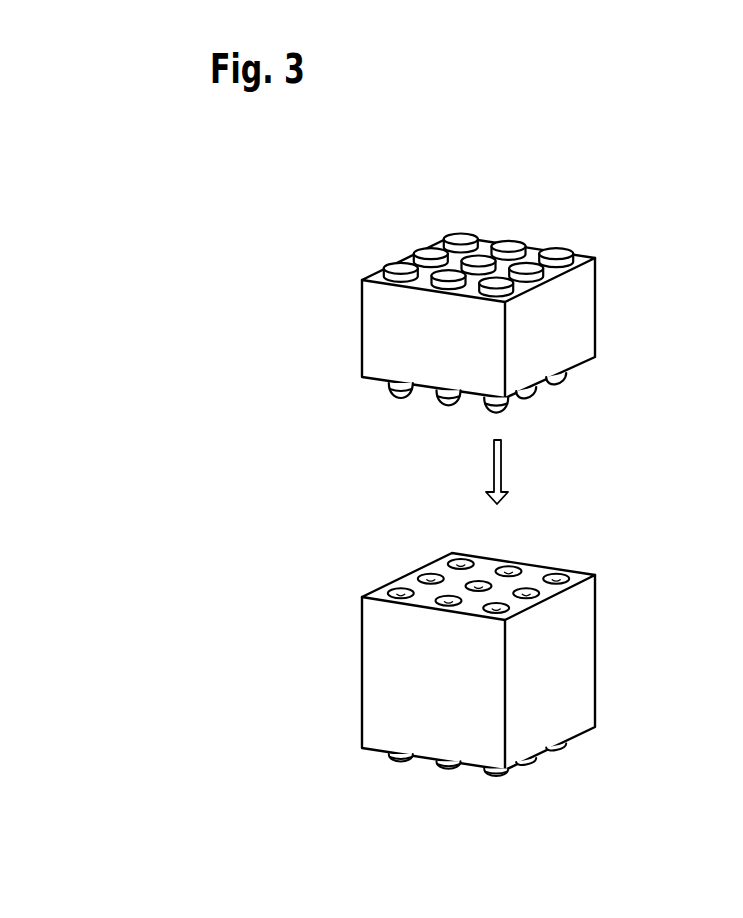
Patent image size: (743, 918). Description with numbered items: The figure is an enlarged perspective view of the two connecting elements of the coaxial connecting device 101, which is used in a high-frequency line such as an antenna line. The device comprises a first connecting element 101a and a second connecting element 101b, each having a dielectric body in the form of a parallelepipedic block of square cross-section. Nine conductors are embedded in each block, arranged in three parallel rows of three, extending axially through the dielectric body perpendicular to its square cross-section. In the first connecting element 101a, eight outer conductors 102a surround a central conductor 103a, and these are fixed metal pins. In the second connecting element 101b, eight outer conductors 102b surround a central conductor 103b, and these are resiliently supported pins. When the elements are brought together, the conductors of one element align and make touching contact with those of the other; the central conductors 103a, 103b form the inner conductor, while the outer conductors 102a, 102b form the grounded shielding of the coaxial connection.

The connecting device 101 is at (645, 267).
The first connecting element 101a is at (580, 665).
The second connecting element 101b is at (572, 323).
The outer conductors 102a is at (458, 561).
The outer conductors 102b is at (461, 238).
The central conductor 103a is at (480, 585).
The central conductor 103b is at (485, 257).